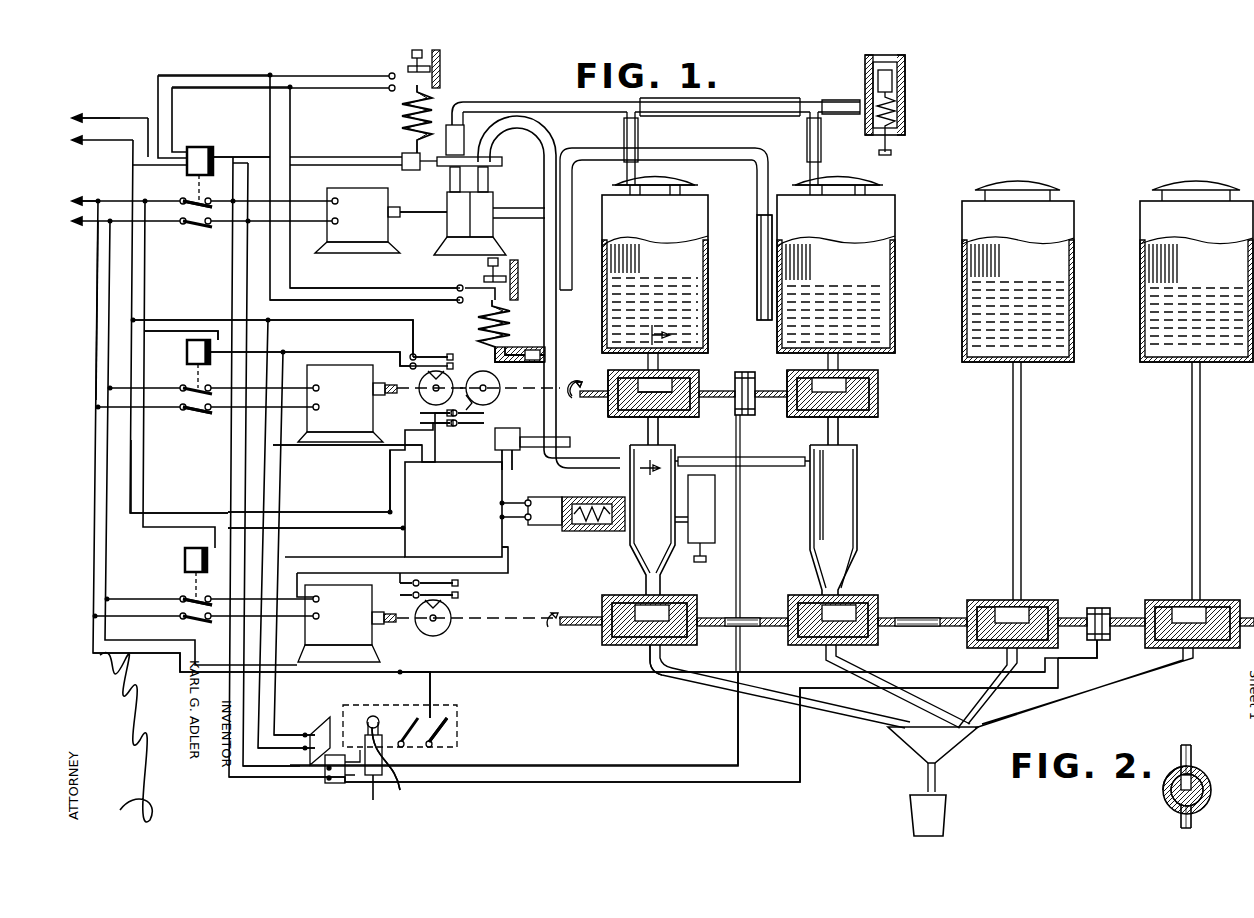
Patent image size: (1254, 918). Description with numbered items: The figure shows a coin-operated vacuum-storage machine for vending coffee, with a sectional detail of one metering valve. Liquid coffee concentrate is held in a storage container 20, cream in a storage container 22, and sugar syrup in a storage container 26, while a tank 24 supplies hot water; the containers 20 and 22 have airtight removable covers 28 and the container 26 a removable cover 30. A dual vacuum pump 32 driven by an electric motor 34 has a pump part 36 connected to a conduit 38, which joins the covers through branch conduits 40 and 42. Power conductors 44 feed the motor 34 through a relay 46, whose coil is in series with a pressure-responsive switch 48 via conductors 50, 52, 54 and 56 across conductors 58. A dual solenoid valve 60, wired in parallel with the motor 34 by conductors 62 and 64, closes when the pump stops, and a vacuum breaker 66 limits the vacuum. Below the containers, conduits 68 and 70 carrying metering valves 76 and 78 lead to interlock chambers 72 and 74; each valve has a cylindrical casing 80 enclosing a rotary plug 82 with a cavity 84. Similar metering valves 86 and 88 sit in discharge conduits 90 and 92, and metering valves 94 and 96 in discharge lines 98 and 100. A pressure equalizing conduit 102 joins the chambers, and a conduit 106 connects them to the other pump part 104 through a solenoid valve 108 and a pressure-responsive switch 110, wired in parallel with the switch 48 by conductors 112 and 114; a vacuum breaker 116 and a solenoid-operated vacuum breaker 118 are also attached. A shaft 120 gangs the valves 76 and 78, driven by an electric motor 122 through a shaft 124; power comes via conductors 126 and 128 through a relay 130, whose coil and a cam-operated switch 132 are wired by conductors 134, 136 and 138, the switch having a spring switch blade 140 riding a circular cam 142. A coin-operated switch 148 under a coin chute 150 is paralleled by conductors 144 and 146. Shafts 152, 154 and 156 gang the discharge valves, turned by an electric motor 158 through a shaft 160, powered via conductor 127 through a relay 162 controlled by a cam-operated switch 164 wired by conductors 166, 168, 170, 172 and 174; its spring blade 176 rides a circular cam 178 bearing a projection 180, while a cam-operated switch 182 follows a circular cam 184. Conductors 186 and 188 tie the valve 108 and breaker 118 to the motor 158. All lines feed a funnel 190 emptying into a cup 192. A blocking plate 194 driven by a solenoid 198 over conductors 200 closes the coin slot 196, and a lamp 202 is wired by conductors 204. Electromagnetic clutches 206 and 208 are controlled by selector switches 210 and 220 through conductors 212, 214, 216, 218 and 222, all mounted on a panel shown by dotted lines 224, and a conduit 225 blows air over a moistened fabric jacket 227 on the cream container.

In FIG. 1, the storage container 20 is at (712, 238).
In FIG. 1, the storage container 22 is at (893, 238).
In FIG. 1, the tank 24 is at (1074, 240).
In FIG. 1, the storage container 26 is at (1140, 262).
In FIG. 1, the removable covers 28 is at (670, 180).
In FIG. 1, the removable cover 30 is at (1045, 185).
In FIG. 1, the dual vacuum pump 32 is at (498, 235).
In FIG. 1, the electric motor 34 is at (375, 190).
In FIG. 1, the pump part 36 is at (447, 208).
In FIG. 1, the conduit 38 is at (530, 100).
In FIG. 1, the branch conduit 40 is at (637, 145).
In FIG. 1, the branch conduit 42 is at (808, 140).
In FIG. 1, the conductors 44 is at (80, 220).
In FIG. 1, the relay 46 is at (225, 156).
In FIG. 1, the pressure-responsive switch 48 is at (398, 120).
In FIG. 1, the conductor 50 is at (185, 191).
In FIG. 1, the conductor 52 is at (190, 147).
In FIG. 1, the conductor 54 is at (190, 90).
In FIG. 1, the conductor 56 is at (198, 76).
In FIG. 1, the conductors 58 is at (95, 120).
In FIG. 1, the dual solenoid valve 60 is at (495, 160).
In FIG. 1, the conductor 62 is at (370, 162).
In FIG. 1, the conductor 64 is at (335, 150).
In FIG. 1, the vacuum breaker 66 is at (905, 90).
In FIG. 1, the conduit 68 is at (662, 434).
In FIG. 2, the conduit 68 is at (1192, 760).
In FIG. 1, the conduit 70 is at (842, 434).
In FIG. 1, the interlock chamber 72 is at (660, 560).
In FIG. 1, the interlock chamber 74 is at (812, 512).
In FIG. 1, the metering valve 76 is at (700, 378).
In FIG. 2, the metering valve 76 is at (1210, 792).
In FIG. 1, the metering valve 78 is at (880, 379).
In FIG. 1, the cylindrical casing 80 is at (608, 405).
In FIG. 2, the cylindrical casing 80 is at (1170, 803).
In FIG. 1, the rotary plug 82 is at (640, 418).
In FIG. 2, the rotary plug 82 is at (1198, 805).
In FIG. 1, the cavity 84 is at (640, 380).
In FIG. 2, the cavity 84 is at (1170, 785).
In FIG. 1, the metering valve 86 is at (615, 598).
In FIG. 1, the metering valve 88 is at (860, 598).
In FIG. 1, the discharge conduit 90 is at (712, 680).
In FIG. 1, the discharge conduit 92 is at (855, 664).
In FIG. 1, the metering valve 94 is at (1035, 600).
In FIG. 1, the metering valve 96 is at (1160, 600).
In FIG. 1, the discharge line 98 is at (1022, 545).
In FIG. 1, the discharge line 100 is at (1192, 528).
In FIG. 1, the pressure equalizing conduit 102 is at (758, 467).
In FIG. 1, the pump part 104 is at (500, 205).
In FIG. 1, the conduit 106 is at (575, 222).
In FIG. 1, the solenoid valve 108 is at (512, 428).
In FIG. 1, the pressure-responsive switch 110 is at (475, 322).
In FIG. 1, the conductor 112 is at (315, 288).
In FIG. 1, the conductor 114 is at (315, 300).
In FIG. 1, the vacuum breaker 116 is at (715, 545).
In FIG. 1, the solenoid-operated vacuum breaker 118 is at (570, 532).
In FIG. 1, the shaft 120 is at (757, 385).
In FIG. 1, the electric motor 122 is at (350, 432).
In FIG. 1, the shaft 124 is at (490, 392).
In FIG. 1, the conductor 126 is at (108, 325).
In FIG. 1, the conductor 127 is at (125, 612).
In FIG. 1, the conductor 128 is at (175, 400).
In FIG. 1, the relay 130 is at (187, 350).
In FIG. 1, the cam-operated switch 132 is at (425, 352).
In FIG. 1, the conductor 134 is at (165, 330).
In FIG. 1, the conductor 136 is at (325, 322).
In FIG. 1, the conductor 138 is at (311, 346).
In FIG. 1, the spring switch blade 140 is at (420, 380).
In FIG. 1, the circular cam 142 is at (425, 398).
In FIG. 1, the conductor 144 is at (280, 505).
In FIG. 1, the conductor 146 is at (275, 450).
In FIG. 1, the coin-operated switch 148 is at (302, 730).
In FIG. 1, the coin chute 150 is at (322, 716).
In FIG. 1, the shaft 152 is at (752, 615).
In FIG. 1, the shaft 154 is at (912, 616).
In FIG. 1, the shaft 156 is at (1102, 606).
In FIG. 1, the electric motor 158 is at (385, 645).
In FIG. 1, the shaft 160 is at (528, 625).
In FIG. 1, the relay 162 is at (185, 563).
In FIG. 1, the cam-operated switch 164 is at (470, 440).
In FIG. 1, the conductor 166 is at (175, 520).
In FIG. 1, the conductor 168 is at (302, 532).
In FIG. 1, the conductor 170 is at (405, 500).
In FIG. 1, the conductor 172 is at (390, 475).
In FIG. 1, the conductor 174 is at (175, 515).
In FIG. 1, the spring blade 176 is at (452, 428).
In FIG. 1, the circular cam 178 is at (498, 378).
In FIG. 1, the projection 180 is at (448, 360).
In FIG. 1, the cam-operated switch 182 is at (462, 587).
In FIG. 1, the circular cam 184 is at (450, 632).
In FIG. 1, the conductor 186 is at (502, 547).
In FIG. 1, the conductor 188 is at (512, 500).
In FIG. 1, the funnel 190 is at (905, 745).
In FIG. 1, the cup 192 is at (948, 803).
In FIG. 1, the blocking plate 194 is at (295, 750).
In FIG. 1, the coin slot 196 is at (365, 720).
In FIG. 1, the solenoid 198 is at (332, 785).
In FIG. 1, the conductors 200 is at (250, 778).
In FIG. 1, the lamp 202 is at (405, 778).
In FIG. 1, the conductors 204 is at (365, 780).
In FIG. 1, the electromagnetic clutch 206 is at (742, 365).
In FIG. 1, the electromagnetic clutch 208 is at (1103, 648).
In FIG. 1, the selector switch 210 is at (458, 712).
In FIG. 1, the conductor 212 is at (140, 658).
In FIG. 1, the conductor 214 is at (590, 765).
In FIG. 1, the conductor 216 is at (741, 533).
In FIG. 1, the conductor 218 is at (548, 676).
In FIG. 1, the selector switch 220 is at (440, 712).
In FIG. 1, the conductor 222 is at (438, 690).
In FIG. 1, the dotted lines 224 is at (625, 784).
In FIG. 1, the conduit 225 is at (722, 150).
In FIG. 1, the moistened fabric jacket 227 is at (853, 267).